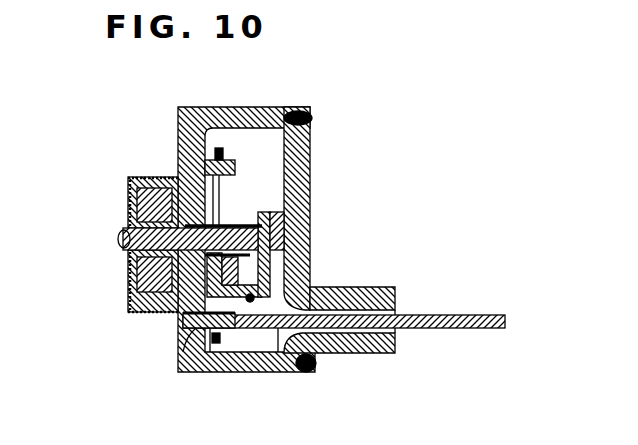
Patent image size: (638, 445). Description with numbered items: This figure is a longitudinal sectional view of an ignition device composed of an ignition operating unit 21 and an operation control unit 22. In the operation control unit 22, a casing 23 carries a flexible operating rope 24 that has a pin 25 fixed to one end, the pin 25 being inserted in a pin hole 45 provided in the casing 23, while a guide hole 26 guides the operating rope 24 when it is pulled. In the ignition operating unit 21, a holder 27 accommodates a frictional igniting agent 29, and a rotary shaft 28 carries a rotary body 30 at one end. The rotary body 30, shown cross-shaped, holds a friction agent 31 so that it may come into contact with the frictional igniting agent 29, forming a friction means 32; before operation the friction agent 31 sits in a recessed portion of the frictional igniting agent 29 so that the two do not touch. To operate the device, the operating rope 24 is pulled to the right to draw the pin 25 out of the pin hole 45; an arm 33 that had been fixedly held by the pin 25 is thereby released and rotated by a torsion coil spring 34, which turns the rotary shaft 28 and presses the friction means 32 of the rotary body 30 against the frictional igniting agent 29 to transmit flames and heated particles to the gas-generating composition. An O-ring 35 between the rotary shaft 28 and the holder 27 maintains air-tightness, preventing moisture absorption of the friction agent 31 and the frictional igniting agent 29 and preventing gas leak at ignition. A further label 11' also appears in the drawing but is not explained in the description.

The housing 21 is at (221, 104).
The housing assembly 22 is at (334, 208).
The housing wall 23 is at (313, 175).
The rod 24 is at (466, 329).
The hub end 25 is at (188, 372).
The lower flange 26 is at (383, 338).
The upper spool flange 27 is at (117, 170).
The lower spool flange 28 is at (116, 285).
The knurled surface 29 is at (128, 179).
The spool frame 30 is at (122, 190).
The spool shaft 31 is at (125, 238).
The spool core 32 is at (125, 212).
The mounting bracket 33 is at (302, 258).
The retainer 34 is at (236, 220).
The bracket 35 is at (162, 318).
The hub 45 is at (184, 330).
The core element 11' is at (135, 288).